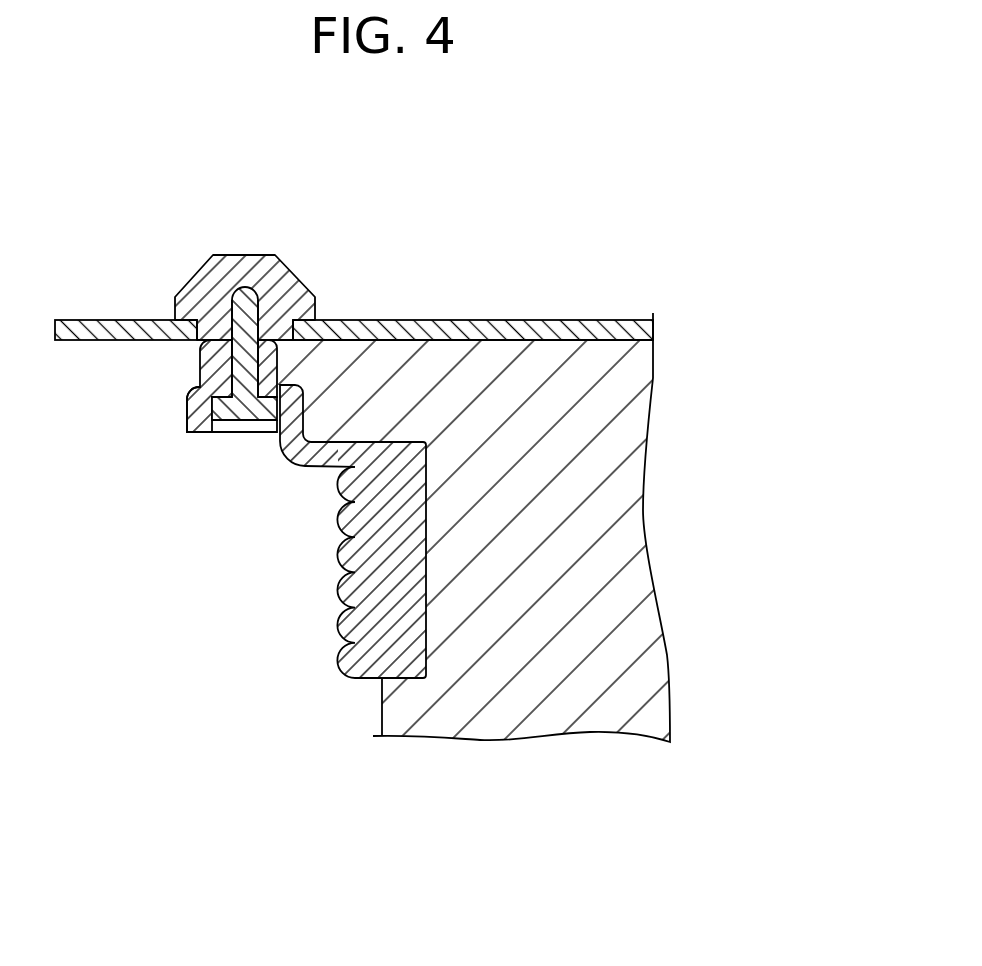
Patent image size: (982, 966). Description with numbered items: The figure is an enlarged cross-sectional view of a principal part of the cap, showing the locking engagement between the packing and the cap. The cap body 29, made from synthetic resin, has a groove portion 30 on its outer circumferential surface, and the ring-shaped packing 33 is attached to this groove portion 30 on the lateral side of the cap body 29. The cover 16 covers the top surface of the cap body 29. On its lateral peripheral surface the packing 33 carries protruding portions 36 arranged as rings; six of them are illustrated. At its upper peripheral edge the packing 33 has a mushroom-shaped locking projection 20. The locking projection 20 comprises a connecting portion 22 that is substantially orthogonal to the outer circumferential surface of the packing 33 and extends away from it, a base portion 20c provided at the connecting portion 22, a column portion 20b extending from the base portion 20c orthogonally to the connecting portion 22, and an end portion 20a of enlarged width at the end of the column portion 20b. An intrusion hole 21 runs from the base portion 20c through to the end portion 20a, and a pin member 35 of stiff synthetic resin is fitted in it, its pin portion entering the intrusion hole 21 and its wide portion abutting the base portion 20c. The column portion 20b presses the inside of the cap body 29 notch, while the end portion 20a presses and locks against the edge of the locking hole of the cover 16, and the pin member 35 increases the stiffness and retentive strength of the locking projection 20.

The cover 16 is at (587, 320).
The locking projection 20 is at (241, 320).
The end portion 20a is at (193, 277).
The column portion 20b is at (205, 372).
The base portion 20c is at (187, 418).
The intrusion hole 21 is at (245, 433).
The pin member 35 is at (240, 361).
The connecting portion 22 is at (298, 468).
The cap body 29 is at (645, 717).
The groove portion 30 is at (369, 593).
The packing 33 is at (375, 657).
The protruding portions 36 is at (340, 628).